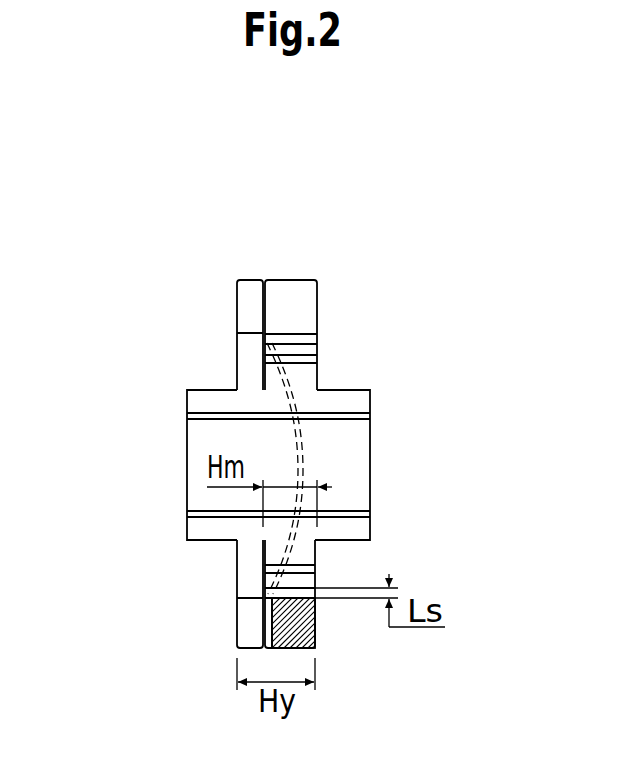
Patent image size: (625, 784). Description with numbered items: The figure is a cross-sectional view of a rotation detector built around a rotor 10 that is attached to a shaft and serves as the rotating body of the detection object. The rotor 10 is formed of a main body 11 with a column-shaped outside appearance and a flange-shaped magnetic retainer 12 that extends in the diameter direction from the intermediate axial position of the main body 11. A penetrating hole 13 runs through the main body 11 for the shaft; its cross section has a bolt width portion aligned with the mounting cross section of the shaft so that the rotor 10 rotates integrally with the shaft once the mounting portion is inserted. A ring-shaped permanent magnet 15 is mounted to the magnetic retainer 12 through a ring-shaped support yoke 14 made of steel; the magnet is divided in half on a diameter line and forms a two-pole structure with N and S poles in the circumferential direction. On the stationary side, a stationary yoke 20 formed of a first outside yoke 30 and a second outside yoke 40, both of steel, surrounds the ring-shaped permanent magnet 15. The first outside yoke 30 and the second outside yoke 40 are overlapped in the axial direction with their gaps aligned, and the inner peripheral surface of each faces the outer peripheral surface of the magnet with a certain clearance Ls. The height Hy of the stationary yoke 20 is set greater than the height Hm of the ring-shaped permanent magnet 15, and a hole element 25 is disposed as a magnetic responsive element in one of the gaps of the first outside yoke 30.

The rotor 10 is at (193, 387).
The main body 11 is at (203, 530).
The magnetic retainer 12 is at (300, 553).
The penetrating hole 13 is at (204, 417).
The support yoke 14 is at (320, 360).
The ring-shaped permanent magnet 15 is at (320, 351).
The stationary yoke 20 is at (289, 244).
The hole element 25 is at (303, 637).
The first outside yoke 30 is at (295, 278).
The second outside yoke 40 is at (249, 278).